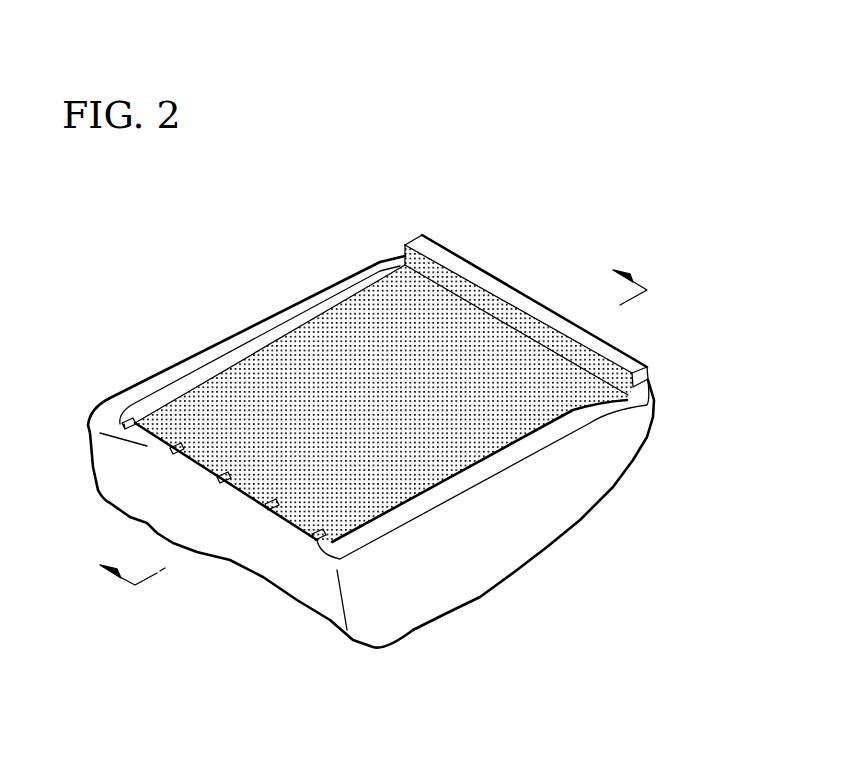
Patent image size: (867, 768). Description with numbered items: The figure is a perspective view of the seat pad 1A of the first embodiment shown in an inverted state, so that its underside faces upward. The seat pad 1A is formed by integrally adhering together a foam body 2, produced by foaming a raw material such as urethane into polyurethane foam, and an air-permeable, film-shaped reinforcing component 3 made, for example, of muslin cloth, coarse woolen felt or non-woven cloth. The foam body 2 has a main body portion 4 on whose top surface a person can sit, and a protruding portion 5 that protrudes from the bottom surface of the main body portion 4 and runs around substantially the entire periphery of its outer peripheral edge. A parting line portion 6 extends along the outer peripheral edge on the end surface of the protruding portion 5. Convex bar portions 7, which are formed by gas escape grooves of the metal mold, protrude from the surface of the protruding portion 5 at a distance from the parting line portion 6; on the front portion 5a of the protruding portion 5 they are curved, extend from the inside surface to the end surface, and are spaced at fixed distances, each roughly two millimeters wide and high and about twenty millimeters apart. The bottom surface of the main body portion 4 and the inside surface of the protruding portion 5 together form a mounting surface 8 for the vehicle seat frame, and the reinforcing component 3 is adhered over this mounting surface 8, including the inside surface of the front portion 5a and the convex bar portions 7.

The seat pad 1A is at (653, 153).
The foam body 2 is at (747, 343).
The reinforcing component 3 is at (421, 303).
The main body portion 4 is at (633, 435).
The protruding portion 5 is at (642, 382).
The front portion 5a is at (147, 445).
The parting line portion 6 is at (513, 287).
The convex bar portions 7 is at (130, 422).
The mounting surface 8 is at (520, 378).